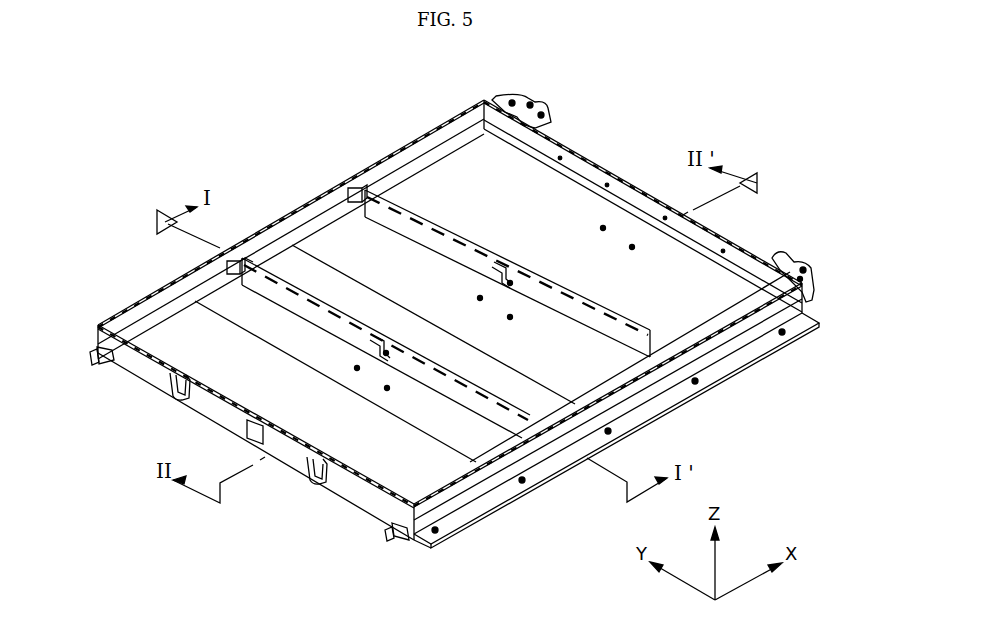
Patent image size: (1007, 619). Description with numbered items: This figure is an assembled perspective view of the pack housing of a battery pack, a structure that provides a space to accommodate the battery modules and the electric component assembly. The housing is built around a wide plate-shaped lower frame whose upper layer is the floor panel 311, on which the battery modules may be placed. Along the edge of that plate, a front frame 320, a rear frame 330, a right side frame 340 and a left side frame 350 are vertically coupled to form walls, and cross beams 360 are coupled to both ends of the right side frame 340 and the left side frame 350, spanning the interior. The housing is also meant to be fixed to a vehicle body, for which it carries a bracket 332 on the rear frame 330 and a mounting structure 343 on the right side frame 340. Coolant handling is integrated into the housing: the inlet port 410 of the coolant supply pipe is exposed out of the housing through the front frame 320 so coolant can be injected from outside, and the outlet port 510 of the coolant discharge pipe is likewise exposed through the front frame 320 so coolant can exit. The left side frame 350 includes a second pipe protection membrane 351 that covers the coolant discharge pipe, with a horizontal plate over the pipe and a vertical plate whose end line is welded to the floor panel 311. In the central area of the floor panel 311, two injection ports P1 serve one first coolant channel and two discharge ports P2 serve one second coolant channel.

The floor panel 311 is at (548, 185).
The front frame 320 is at (343, 490).
The rear frame 330 is at (650, 192).
The bracket 332 is at (512, 98).
The right side frame 340 is at (643, 390).
The mounting structure 343 is at (470, 512).
The left side frame 350 is at (290, 217).
The second pipe protection membrane 351 is at (430, 158).
The cross beam 360 is at (353, 188).
The inlet port 410 is at (395, 540).
The outlet port 510 is at (103, 363).
The injection port P1 is at (386, 351).
The discharge port P2 is at (478, 297).